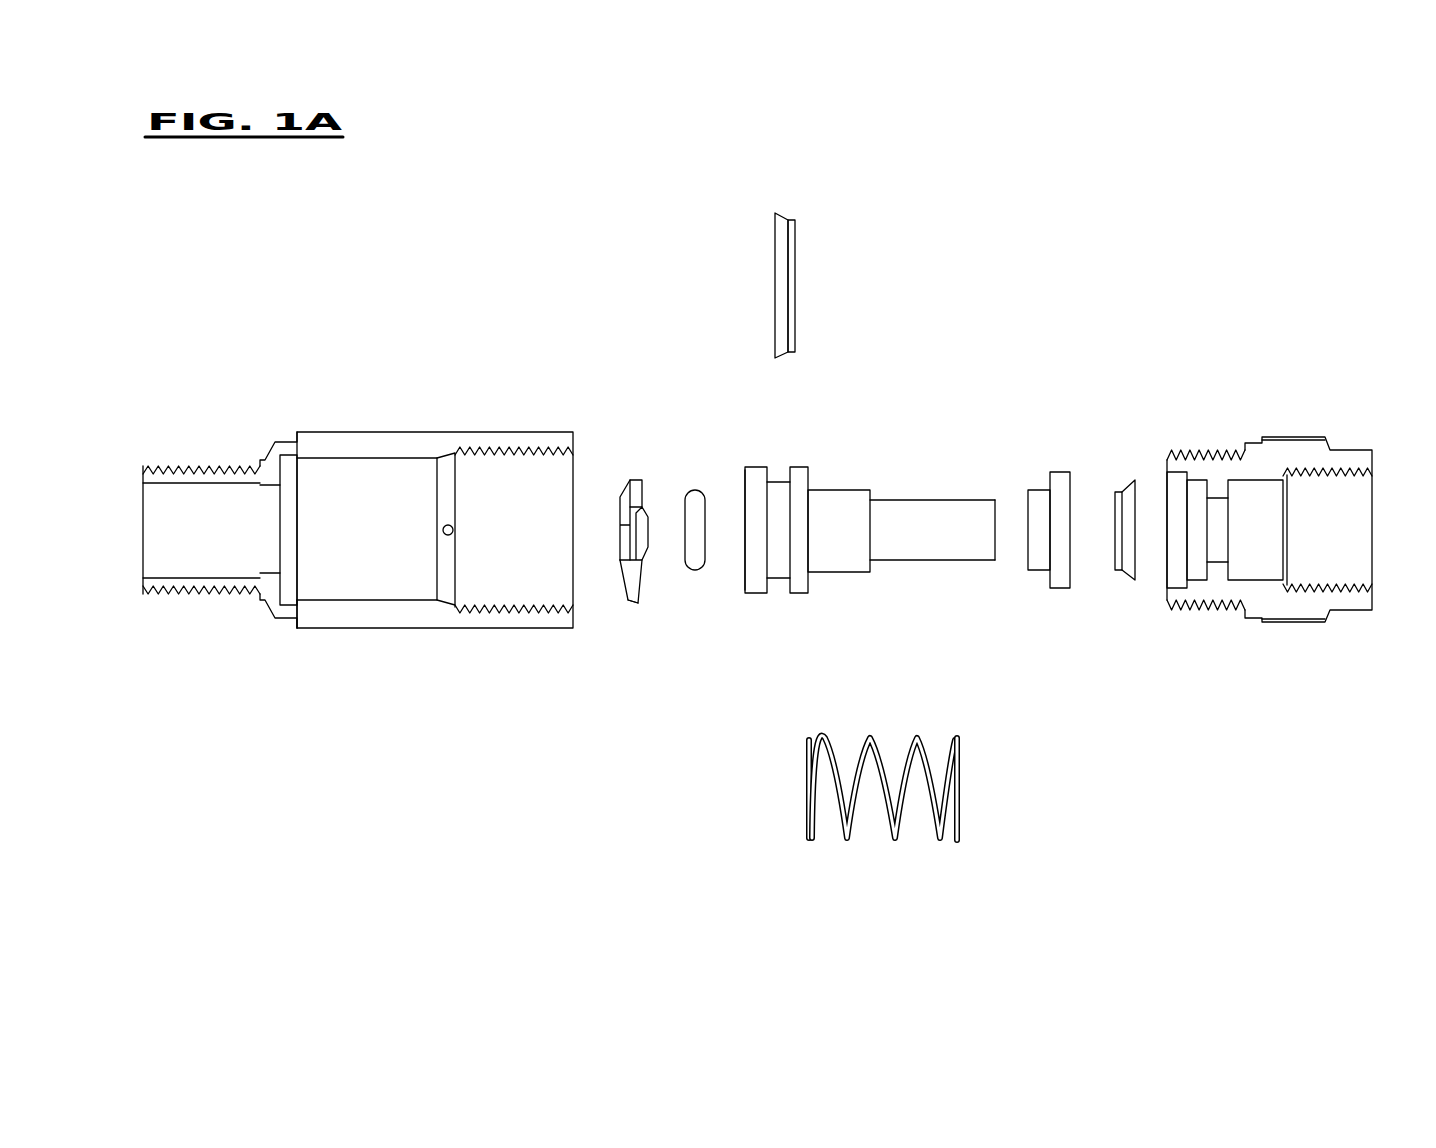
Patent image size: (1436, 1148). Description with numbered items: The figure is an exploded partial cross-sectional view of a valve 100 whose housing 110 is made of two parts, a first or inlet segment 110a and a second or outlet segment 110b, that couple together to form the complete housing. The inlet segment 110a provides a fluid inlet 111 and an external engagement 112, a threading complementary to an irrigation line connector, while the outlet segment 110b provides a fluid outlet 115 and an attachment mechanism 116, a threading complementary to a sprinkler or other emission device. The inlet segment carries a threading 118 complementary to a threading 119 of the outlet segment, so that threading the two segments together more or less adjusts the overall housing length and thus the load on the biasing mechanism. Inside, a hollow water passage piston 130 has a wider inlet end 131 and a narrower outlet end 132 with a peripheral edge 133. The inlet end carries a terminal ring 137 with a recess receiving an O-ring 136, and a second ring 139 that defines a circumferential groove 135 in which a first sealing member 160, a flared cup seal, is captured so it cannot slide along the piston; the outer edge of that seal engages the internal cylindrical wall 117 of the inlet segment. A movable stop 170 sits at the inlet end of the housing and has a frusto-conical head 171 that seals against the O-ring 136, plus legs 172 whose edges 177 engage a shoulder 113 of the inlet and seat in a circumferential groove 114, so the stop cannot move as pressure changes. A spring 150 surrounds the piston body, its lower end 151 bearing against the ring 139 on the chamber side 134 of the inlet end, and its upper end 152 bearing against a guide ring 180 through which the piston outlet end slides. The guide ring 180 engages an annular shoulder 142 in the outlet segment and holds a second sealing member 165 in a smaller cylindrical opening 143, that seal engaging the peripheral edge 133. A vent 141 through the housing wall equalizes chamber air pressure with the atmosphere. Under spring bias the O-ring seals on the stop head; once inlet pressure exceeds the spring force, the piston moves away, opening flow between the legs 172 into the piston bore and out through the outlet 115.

The valve 100 is at (545, 222).
The housing 110 is at (480, 340).
The first part of the housing 110a is at (412, 432).
The second part of the housing 110b is at (1290, 443).
The fluid inlet 111 is at (173, 495).
The engagement 112 is at (187, 590).
The shoulder 113 is at (300, 595).
The circumferential groove 114 is at (292, 455).
The fluid outlet 115 is at (1273, 512).
The attachment mechanism 116 is at (1273, 568).
The internal cylindrical wall 117 is at (400, 577).
The threading 118 is at (513, 593).
The threading 119 is at (1200, 450).
The piston 130 is at (917, 433).
The inlet end 131 is at (740, 570).
The outlet end 132 is at (977, 563).
The peripheral edge 133 is at (953, 500).
The chamber side 134 is at (810, 573).
The circumferential groove 135 is at (778, 478).
The O-ring 136 is at (705, 478).
The terminal ring 137 is at (752, 468).
The second ring 139 is at (802, 470).
The vent 141 is at (453, 530).
The annular shoulder 142 is at (1172, 488).
The smaller cylindrical opening 143 is at (1190, 560).
The spring 150 is at (895, 838).
The lower end of spring 151 is at (805, 770).
The upper end of spring 152 is at (965, 790).
The first sealing member 160 is at (788, 222).
The second sealing member 165 is at (1127, 578).
The movable stop 170 is at (622, 458).
The head 171 is at (653, 527).
The legs 172 is at (623, 587).
The edge 177 is at (637, 605).
The guide ring 180 is at (1053, 472).